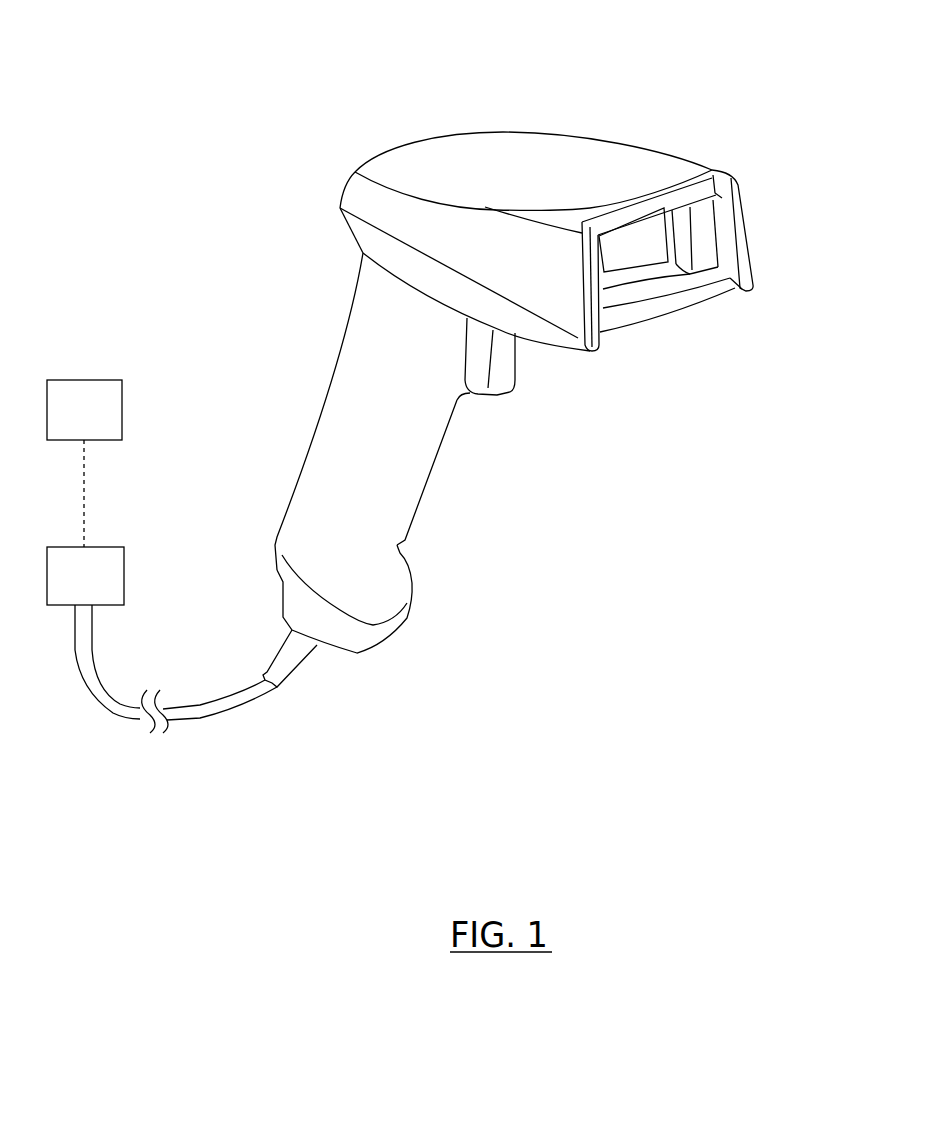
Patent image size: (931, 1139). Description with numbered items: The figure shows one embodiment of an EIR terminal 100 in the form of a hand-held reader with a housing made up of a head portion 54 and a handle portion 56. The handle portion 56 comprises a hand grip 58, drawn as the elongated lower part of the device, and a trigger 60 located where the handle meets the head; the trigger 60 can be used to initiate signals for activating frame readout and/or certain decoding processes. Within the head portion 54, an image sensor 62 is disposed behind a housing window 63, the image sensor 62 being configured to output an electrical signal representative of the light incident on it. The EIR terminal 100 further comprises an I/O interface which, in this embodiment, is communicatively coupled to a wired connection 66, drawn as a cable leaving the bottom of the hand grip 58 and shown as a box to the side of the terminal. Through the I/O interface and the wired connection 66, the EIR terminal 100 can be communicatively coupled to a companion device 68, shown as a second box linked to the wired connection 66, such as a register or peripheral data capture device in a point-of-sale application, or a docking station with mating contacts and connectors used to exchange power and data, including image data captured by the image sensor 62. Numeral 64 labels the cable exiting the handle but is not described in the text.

The EIR terminal 100 is at (750, 66).
The head portion 54 is at (776, 162).
The handle portion 56 is at (449, 507).
The hand grip 58 is at (325, 415).
The trigger 60 is at (505, 370).
The image sensor 62 is at (637, 240).
The housing window 63 is at (637, 240).
The cable 64 is at (317, 679).
The wired connection 66 is at (85, 576).
The companion device 68 is at (84, 463).